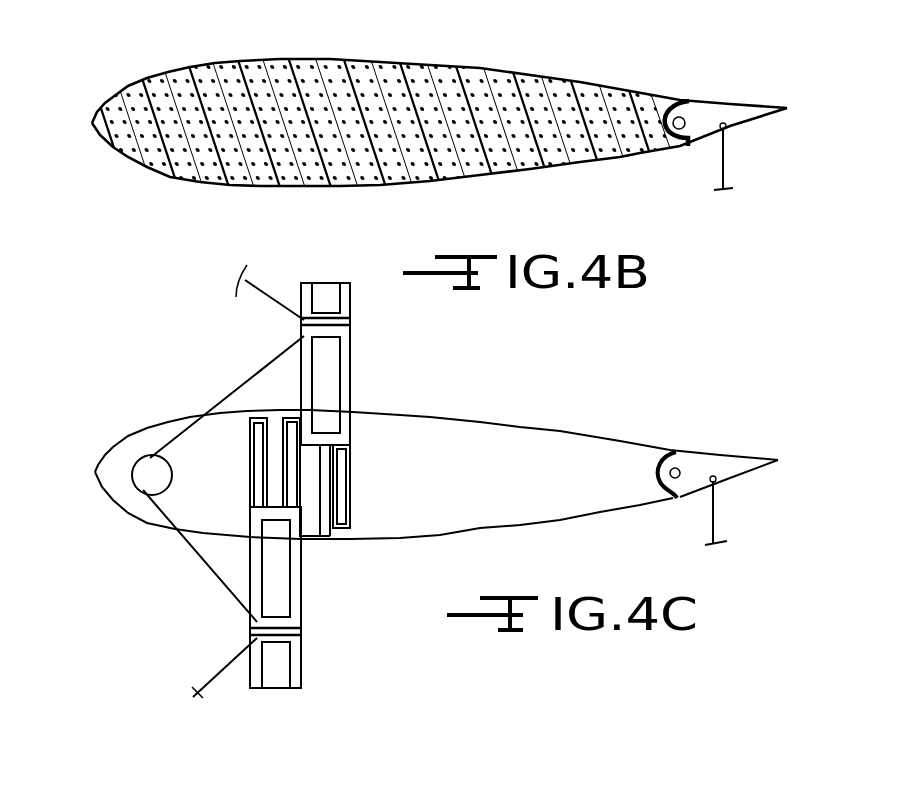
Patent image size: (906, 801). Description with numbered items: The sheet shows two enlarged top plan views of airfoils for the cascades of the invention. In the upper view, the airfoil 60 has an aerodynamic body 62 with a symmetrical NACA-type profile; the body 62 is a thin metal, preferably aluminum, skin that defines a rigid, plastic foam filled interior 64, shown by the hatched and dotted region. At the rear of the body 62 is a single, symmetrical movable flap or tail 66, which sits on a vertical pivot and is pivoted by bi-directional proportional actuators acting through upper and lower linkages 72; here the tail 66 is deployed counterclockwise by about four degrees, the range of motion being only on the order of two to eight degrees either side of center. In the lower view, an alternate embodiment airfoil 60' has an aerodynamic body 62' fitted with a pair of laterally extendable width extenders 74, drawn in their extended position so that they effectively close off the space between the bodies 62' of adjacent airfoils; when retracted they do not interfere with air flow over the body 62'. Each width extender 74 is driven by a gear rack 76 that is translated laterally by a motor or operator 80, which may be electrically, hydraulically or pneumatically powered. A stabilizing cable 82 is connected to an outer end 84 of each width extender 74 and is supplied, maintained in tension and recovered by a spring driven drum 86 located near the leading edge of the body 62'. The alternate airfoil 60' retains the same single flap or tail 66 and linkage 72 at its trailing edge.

In FIG. 4B, the airfoil 60 is at (439, 63).
In FIG. 4B, the body 62 is at (439, 181).
In FIG. 4B, the plastic foam filled interior 64 is at (421, 86).
In FIG. 4B, the single flap or tail 66 is at (700, 117).
In FIG. 4C, the single flap or tail 66 is at (692, 467).
In FIG. 4B, the linkage 72 is at (727, 158).
In FIG. 4C, the linkage 72 is at (716, 520).
In FIG. 4C, the alternate embodiment airfoil 60' is at (436, 418).
In FIG. 4C, the aerodynamic body 62' is at (436, 516).
In FIG. 4C, the width extender 74 is at (302, 295).
In FIG. 4C, the gear rack 76 is at (255, 487).
In FIG. 4C, the motor or operator 80 is at (296, 472).
In FIG. 4C, the stabilizing cable 82 is at (265, 365).
In FIG. 4C, the outer end 84 is at (345, 330).
In FIG. 4C, the spring driven drum 86 is at (145, 475).